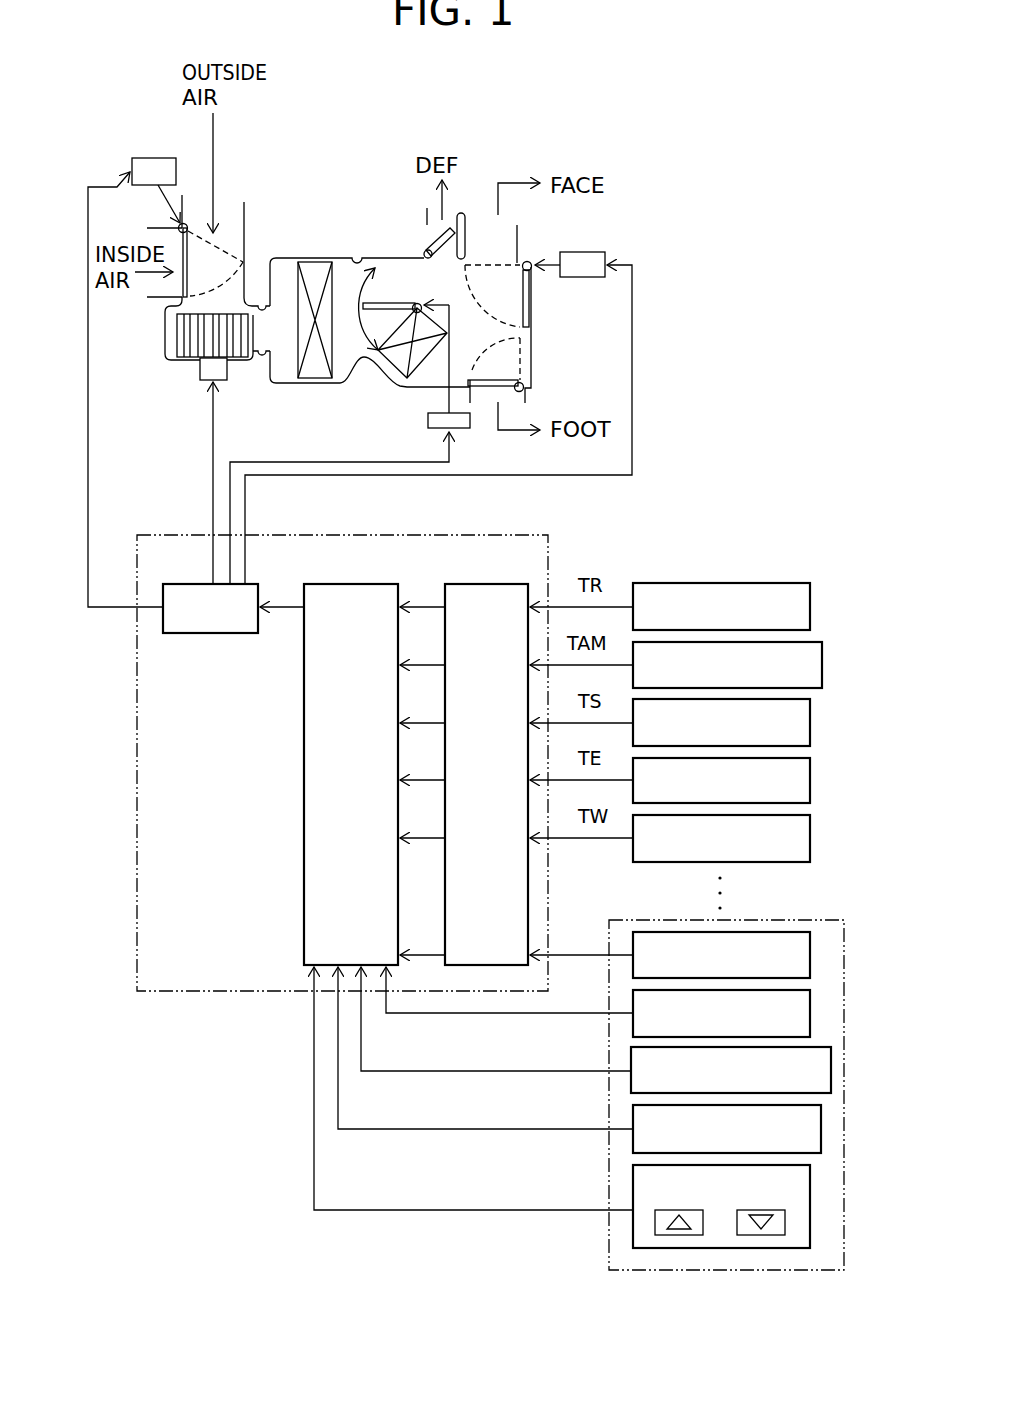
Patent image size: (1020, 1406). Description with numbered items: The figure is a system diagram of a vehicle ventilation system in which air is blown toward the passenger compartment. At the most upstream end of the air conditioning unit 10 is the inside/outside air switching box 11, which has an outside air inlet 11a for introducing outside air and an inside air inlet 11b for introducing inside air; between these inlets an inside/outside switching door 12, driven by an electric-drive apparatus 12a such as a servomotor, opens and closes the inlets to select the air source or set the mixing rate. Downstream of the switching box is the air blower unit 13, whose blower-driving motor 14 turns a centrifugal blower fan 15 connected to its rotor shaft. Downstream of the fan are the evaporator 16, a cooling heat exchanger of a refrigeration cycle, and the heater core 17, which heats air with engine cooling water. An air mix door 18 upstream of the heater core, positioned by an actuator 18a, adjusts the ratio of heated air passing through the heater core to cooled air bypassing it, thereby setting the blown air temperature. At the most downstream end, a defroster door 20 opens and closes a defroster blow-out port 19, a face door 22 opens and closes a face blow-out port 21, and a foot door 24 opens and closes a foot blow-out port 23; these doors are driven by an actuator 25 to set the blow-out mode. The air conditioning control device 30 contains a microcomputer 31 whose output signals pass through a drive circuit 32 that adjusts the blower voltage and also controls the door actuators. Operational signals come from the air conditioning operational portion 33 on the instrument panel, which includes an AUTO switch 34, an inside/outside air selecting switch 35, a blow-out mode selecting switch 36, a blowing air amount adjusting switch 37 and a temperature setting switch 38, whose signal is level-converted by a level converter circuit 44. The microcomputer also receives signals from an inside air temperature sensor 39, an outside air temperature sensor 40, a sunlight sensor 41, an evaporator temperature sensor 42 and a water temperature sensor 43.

The air conditioning unit 10 is at (320, 255).
The inside/outside air switching box 11 is at (178, 225).
The outside air inlet 11a is at (238, 208).
The inside air inlet 11b is at (148, 290).
The inside/outside switching door 12 is at (183, 240).
The electric-drive apparatus 12a is at (136, 158).
The air blower unit 13 is at (165, 360).
The blower-driving motor 14 is at (203, 378).
The centrifugal blower fan 15 is at (177, 335).
The evaporator 16 is at (315, 355).
The heater core 17 is at (397, 358).
The air mix door 18 is at (390, 304).
The actuator 18a is at (440, 427).
The defroster blow-out port 19 is at (430, 208).
The defroster door 20 is at (448, 226).
The face blow-out port 21 is at (494, 243).
The face door 22 is at (532, 295).
The foot blow-out port 23 is at (486, 395).
The foot door 24 is at (494, 382).
The actuator 25 is at (592, 258).
The air conditioning control device 30 is at (133, 713).
The microcomputer 31 is at (352, 584).
The drive circuit 32 is at (200, 633).
The air conditioning operational portion 33 is at (785, 920).
The AUTO switch 34 is at (812, 1011).
The inside/outside air selecting switch 35 is at (832, 1069).
The blow-out mode selecting switch 36 is at (822, 1139).
The blowing air amount adjusting switch 37 is at (812, 1210).
The temperature setting switch 38 is at (812, 953).
The inside air temperature sensor 39 is at (812, 606).
The outside air temperature sensor 40 is at (822, 665).
The sunlight sensor 41 is at (812, 722).
The evaporator temperature sensor 42 is at (812, 780).
The water temperature sensor 43 is at (812, 837).
The level converter circuit 44 is at (466, 584).